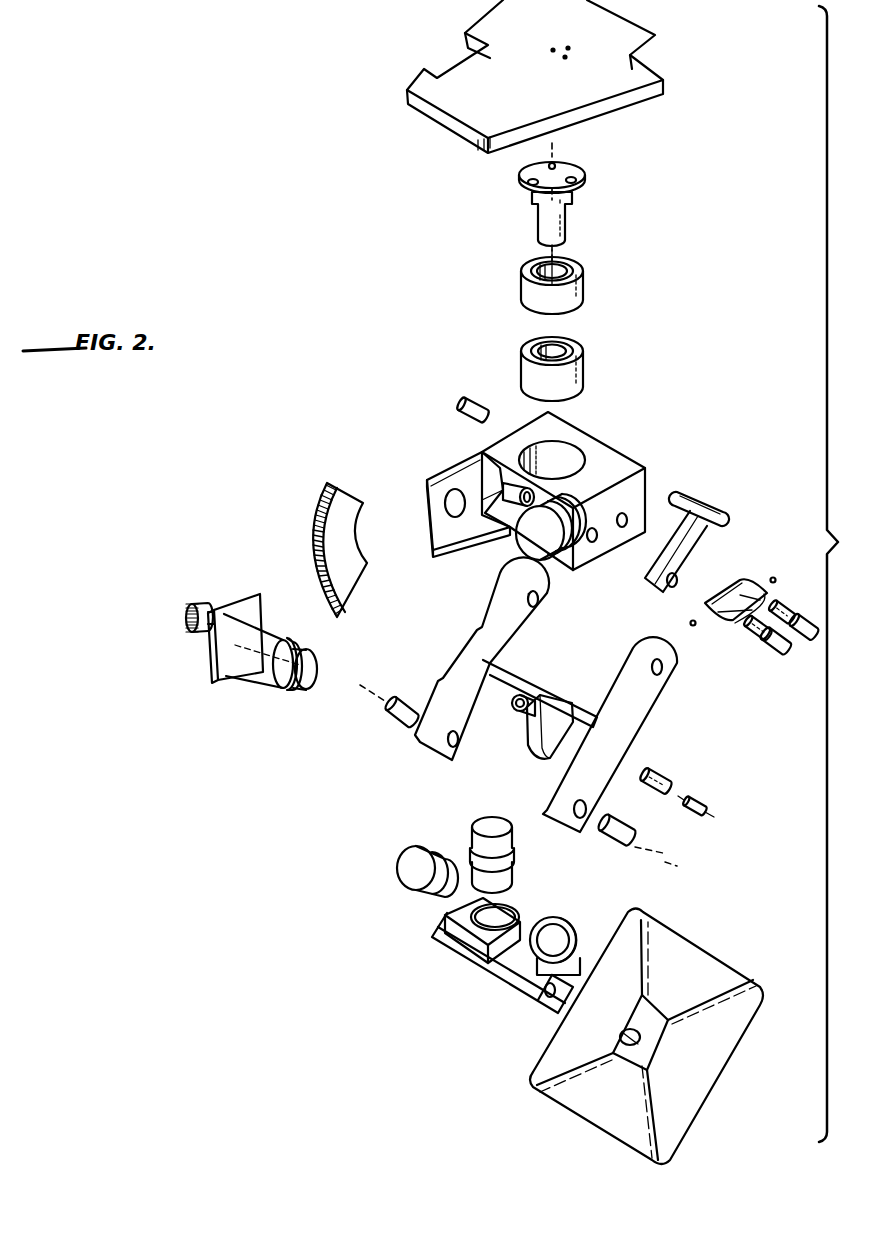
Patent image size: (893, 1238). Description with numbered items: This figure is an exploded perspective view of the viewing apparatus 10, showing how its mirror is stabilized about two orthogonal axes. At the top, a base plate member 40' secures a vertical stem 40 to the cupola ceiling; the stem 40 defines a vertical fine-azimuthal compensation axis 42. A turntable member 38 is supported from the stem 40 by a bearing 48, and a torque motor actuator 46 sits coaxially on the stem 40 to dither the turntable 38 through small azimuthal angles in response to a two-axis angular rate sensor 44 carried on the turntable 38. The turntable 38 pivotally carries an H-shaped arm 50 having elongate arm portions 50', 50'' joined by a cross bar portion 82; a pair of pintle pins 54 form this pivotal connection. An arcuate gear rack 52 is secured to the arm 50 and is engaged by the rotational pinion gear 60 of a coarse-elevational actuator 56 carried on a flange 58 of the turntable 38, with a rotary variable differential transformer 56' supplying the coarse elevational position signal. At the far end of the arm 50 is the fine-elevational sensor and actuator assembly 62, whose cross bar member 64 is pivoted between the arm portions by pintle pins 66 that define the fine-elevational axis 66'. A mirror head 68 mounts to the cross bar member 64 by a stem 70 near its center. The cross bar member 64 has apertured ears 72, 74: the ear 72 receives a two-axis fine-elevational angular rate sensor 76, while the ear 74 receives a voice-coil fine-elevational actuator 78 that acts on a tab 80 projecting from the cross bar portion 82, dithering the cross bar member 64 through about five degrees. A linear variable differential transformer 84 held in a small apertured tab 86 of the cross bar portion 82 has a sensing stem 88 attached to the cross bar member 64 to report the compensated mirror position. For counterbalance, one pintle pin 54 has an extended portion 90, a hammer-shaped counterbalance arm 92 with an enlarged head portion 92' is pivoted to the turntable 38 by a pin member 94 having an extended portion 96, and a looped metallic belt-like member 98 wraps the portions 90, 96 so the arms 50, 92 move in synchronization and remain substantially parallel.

The viewing apparatus 10 is at (318, 256).
The base plate member 40' is at (544, 76).
The vertical stem 40 is at (573, 204).
The vertical fine-azimuthal compensation axis 42 is at (552, 269).
The bearing 48 is at (585, 300).
The torque motor actuator 46 is at (583, 376).
The pintle pins 54 is at (474, 398).
The turntable member 38 is at (610, 452).
The flange 58 is at (436, 533).
The two-axis angular rate sensor 44 is at (532, 537).
The arcuate gear rack 52 is at (343, 498).
The rotational pinion gear 60 is at (208, 602).
The coarse-elevational actuator 56 is at (249, 661).
The rotary variable differential transformer 56' is at (287, 699).
The pintle pins 66 is at (497, 783).
The fine-elevational axis 66' is at (680, 851).
The H-shaped arm 50 is at (568, 700).
The elongate arm portion 50' is at (497, 658).
The elongate arm portion 50'' is at (623, 734).
The cross bar portion 82 is at (533, 687).
The apertured tab 86 is at (515, 707).
The tab 80 is at (533, 743).
The counterbalance arm 92 is at (703, 542).
The enlarged head portion 92' is at (727, 497).
The belt-like member 98 is at (730, 585).
The extended portion 90 is at (804, 637).
The pin member 94 is at (748, 633).
The extended portion 96 is at (775, 653).
The linear variable differential transformer 84 is at (667, 773).
The sensing stem 88 is at (708, 800).
The fine-elevational actuator 78 is at (402, 875).
The two-axis fine-elevational angular rate sensor 76 is at (513, 870).
The fine-elevational sensor and actuator assembly 62 is at (457, 986).
The cross bar member 64 is at (518, 982).
The apertured ear 72 is at (510, 902).
The apertured ear 74 is at (570, 923).
The mirror head 68 is at (700, 958).
The stem 70 is at (643, 1042).